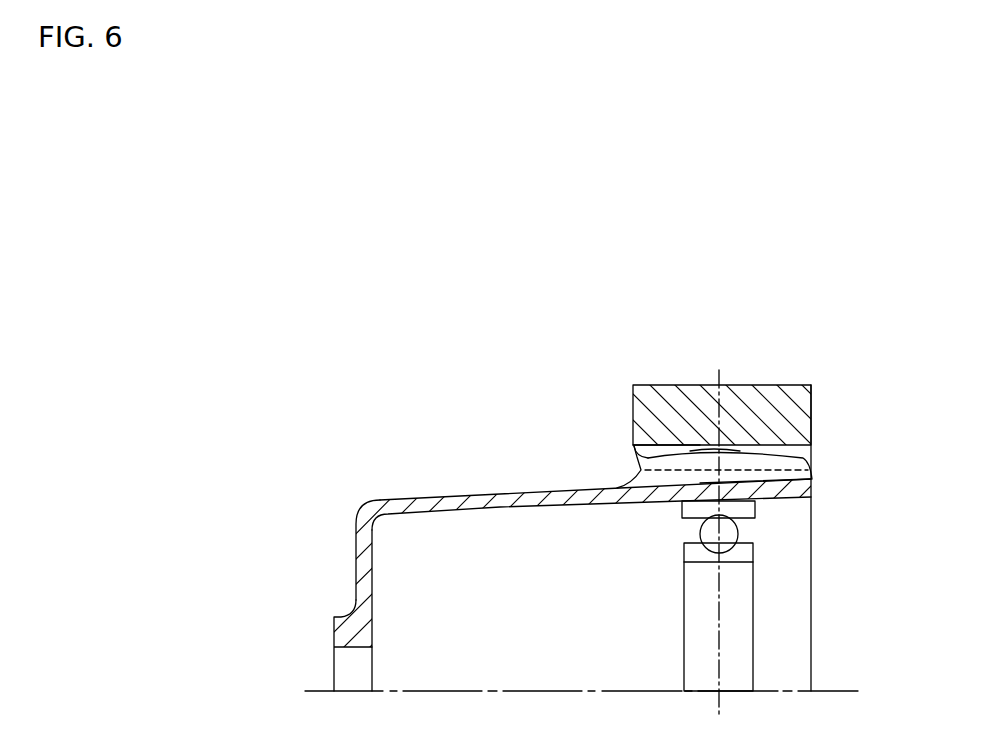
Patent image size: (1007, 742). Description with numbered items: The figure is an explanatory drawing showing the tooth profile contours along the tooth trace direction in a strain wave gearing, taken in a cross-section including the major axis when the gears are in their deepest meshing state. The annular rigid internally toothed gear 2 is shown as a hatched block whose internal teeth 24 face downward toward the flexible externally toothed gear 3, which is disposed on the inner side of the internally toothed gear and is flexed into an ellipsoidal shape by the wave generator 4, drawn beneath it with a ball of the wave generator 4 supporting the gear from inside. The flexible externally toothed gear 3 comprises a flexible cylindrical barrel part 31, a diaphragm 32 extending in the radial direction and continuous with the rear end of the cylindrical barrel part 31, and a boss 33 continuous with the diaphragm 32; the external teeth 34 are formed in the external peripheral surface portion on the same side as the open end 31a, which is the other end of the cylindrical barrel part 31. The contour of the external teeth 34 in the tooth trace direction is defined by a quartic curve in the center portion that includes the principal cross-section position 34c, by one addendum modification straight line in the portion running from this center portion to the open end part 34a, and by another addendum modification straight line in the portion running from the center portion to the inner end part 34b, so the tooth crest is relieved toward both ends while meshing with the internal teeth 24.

The rigid internally toothed gear 2 is at (708, 413).
The flexible externally toothed gear 3 is at (582, 547).
The wave generator 4 is at (766, 603).
The internal teeth 24 is at (626, 452).
The cylindrical barrel part 31 is at (644, 524).
The open end 31a is at (812, 481).
The diaphragm 32 is at (365, 566).
The boss 33 is at (333, 630).
The external teeth 34 is at (712, 410).
The open end part 34a is at (803, 453).
The inner end part 34b is at (638, 457).
The principal cross-section position 34c is at (717, 457).